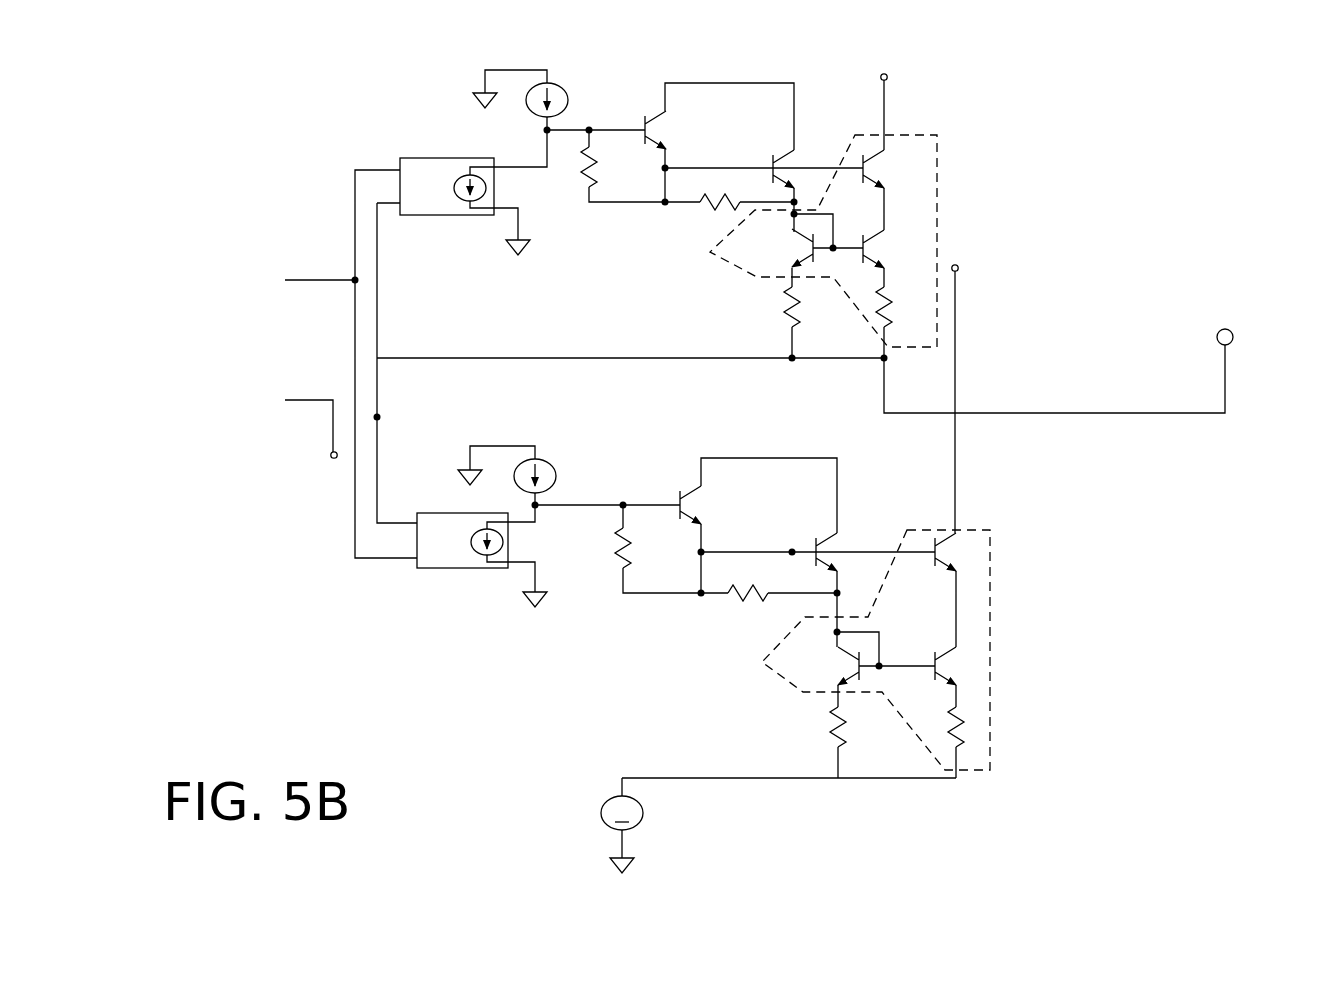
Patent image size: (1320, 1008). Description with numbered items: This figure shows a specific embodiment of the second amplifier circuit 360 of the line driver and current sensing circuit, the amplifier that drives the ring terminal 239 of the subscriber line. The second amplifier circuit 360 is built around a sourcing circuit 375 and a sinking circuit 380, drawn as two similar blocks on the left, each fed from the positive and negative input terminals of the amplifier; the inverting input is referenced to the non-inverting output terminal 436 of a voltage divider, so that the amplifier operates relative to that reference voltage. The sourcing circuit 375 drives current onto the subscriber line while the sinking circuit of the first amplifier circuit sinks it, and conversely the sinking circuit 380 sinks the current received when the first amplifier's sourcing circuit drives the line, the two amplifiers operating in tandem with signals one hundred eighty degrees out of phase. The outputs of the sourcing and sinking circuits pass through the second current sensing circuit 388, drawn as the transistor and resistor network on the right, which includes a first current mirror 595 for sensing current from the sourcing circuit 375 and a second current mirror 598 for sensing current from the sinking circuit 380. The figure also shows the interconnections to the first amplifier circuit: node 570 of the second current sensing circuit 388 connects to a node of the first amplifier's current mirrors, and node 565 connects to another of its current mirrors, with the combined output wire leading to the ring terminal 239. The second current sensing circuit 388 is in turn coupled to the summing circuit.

The ring terminal 239 is at (1228, 328).
The second amplifier circuit 360 is at (292, 691).
The sourcing circuit 375 is at (350, 112).
The sinking circuit 380 is at (434, 616).
The second current sensing circuit 388 is at (882, 665).
The non-inverting output terminal 436 is at (331, 462).
The node 565 is at (960, 272).
The node 570 is at (888, 80).
The current mirror 595 is at (722, 258).
The current mirror 598 is at (760, 669).